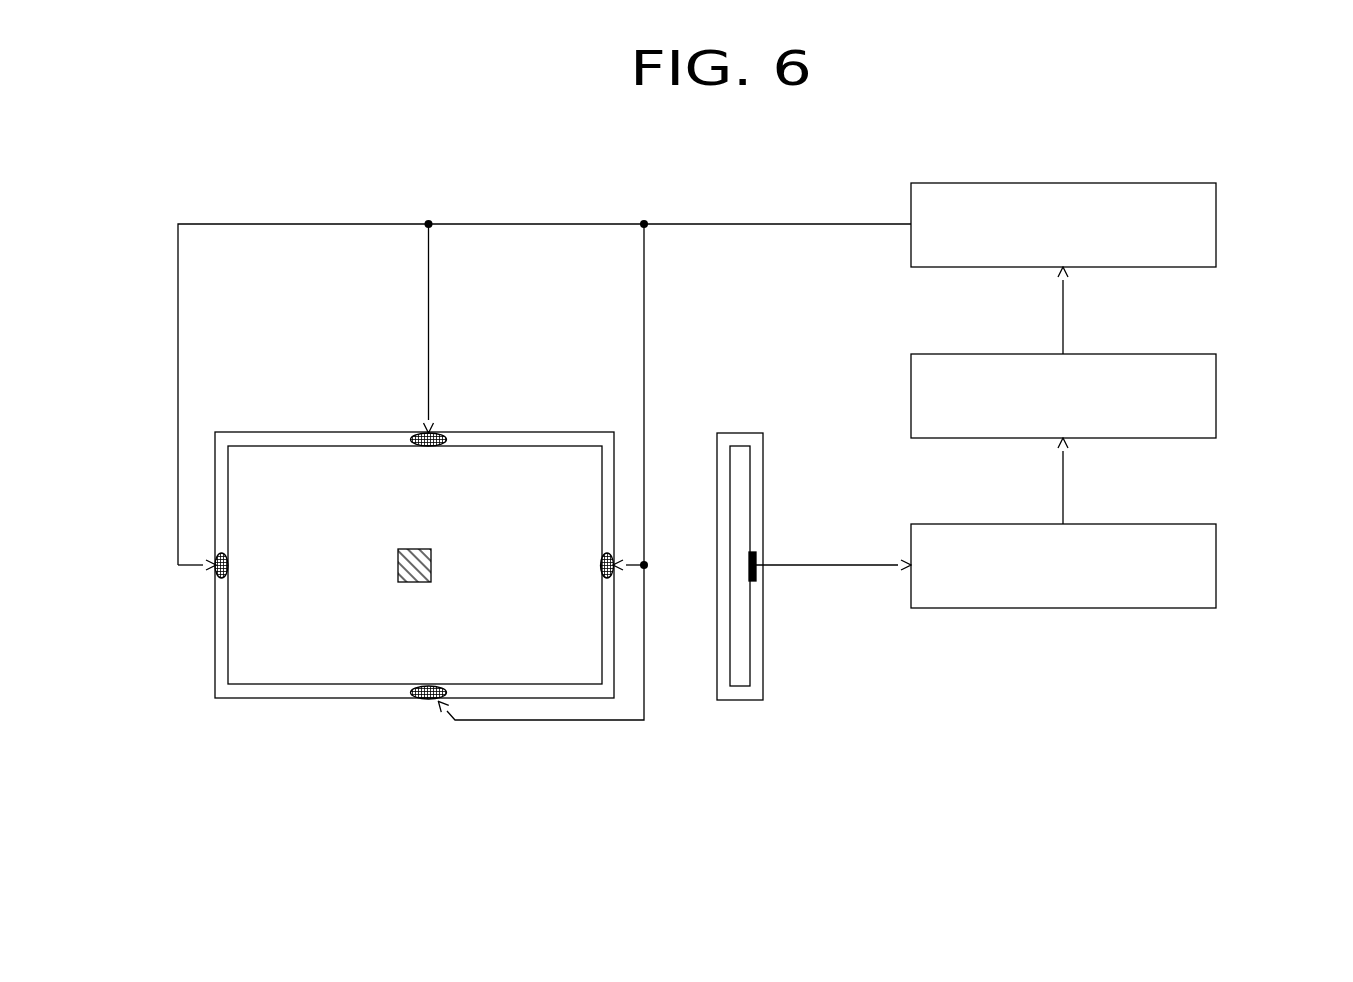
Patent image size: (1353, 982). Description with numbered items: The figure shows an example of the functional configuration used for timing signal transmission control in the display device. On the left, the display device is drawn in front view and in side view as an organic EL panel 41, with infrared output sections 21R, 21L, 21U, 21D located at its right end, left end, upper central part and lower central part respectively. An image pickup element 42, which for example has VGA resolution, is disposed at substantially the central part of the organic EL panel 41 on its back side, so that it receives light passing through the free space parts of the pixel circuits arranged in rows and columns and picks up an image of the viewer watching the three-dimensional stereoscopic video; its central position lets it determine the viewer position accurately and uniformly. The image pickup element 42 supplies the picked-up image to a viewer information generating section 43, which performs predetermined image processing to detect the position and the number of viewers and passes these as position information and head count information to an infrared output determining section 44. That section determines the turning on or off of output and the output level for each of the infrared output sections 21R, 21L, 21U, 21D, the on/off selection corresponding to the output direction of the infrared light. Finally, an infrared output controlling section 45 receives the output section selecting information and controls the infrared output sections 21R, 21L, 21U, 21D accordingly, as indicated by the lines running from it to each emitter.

The organic EL panel 41 is at (303, 472).
The image pickup element 42 is at (432, 553).
The infrared output section 21U is at (443, 430).
The infrared output section 21D is at (418, 698).
The infrared output section 21R is at (216, 577).
The infrared output section 21L is at (615, 572).
The viewer information generating section 43 is at (1216, 565).
The infrared output determining section 44 is at (1216, 395).
The infrared output controlling section 45 is at (1216, 223).